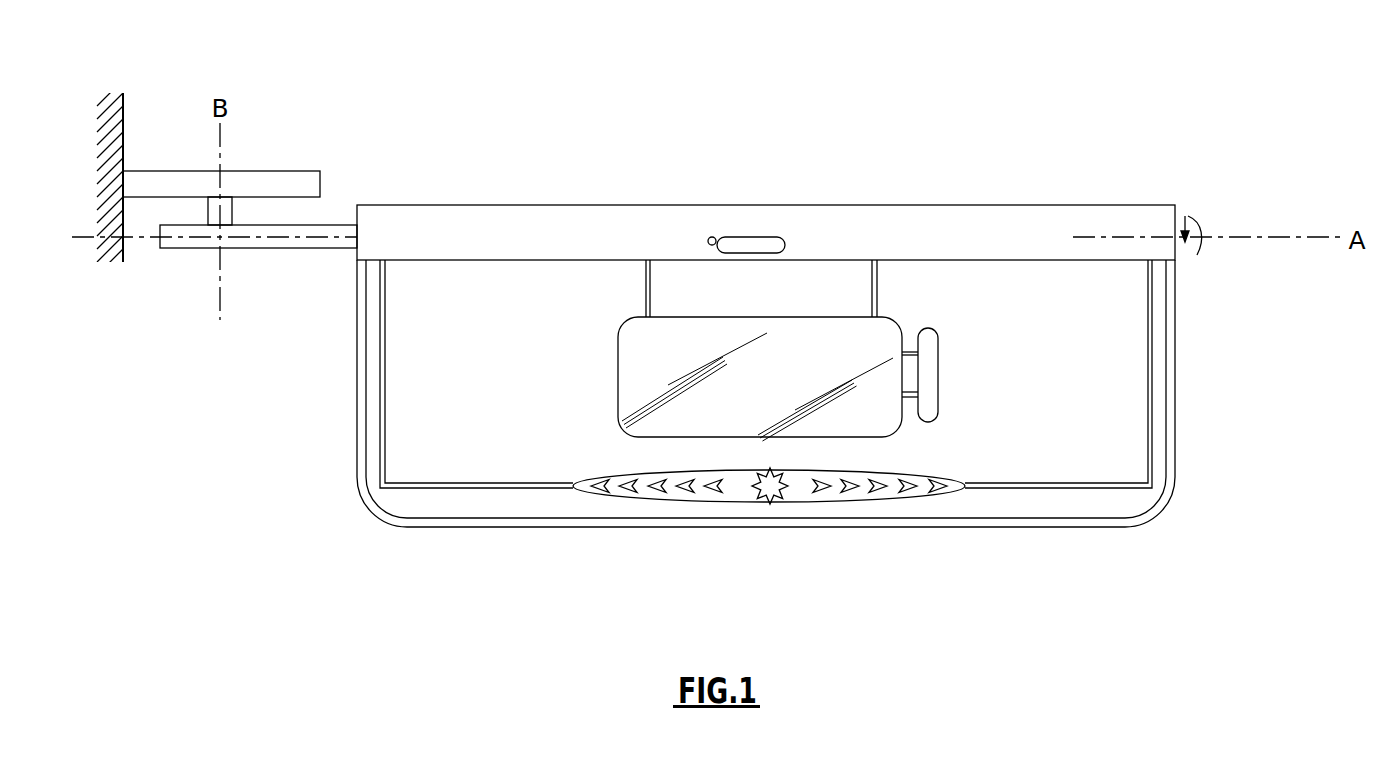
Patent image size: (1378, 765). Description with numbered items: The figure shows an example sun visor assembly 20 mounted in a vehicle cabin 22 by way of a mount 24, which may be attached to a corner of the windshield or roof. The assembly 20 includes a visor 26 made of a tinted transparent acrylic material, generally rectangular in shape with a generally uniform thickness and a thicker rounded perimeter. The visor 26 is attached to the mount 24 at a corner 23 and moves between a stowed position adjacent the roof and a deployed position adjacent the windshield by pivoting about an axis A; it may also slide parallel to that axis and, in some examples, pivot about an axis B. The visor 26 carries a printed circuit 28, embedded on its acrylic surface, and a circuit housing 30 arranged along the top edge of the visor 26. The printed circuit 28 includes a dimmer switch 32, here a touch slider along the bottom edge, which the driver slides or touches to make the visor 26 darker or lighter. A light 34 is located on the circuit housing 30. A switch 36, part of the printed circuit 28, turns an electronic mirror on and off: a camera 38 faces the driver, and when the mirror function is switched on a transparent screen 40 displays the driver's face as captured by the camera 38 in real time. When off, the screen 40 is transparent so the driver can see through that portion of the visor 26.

The sun visor assembly 20 is at (512, 94).
The vehicle cabin 22 is at (107, 163).
The corner 23 is at (327, 225).
The mount 24 is at (291, 138).
The visor 26 is at (1127, 365).
The printed circuit 28 is at (380, 458).
The circuit housing 30 is at (947, 233).
The dimmer switch 32 is at (915, 495).
The light 34 is at (758, 243).
The switch 36 is at (930, 385).
The camera 38 is at (711, 238).
The transparent screen 40 is at (635, 397).